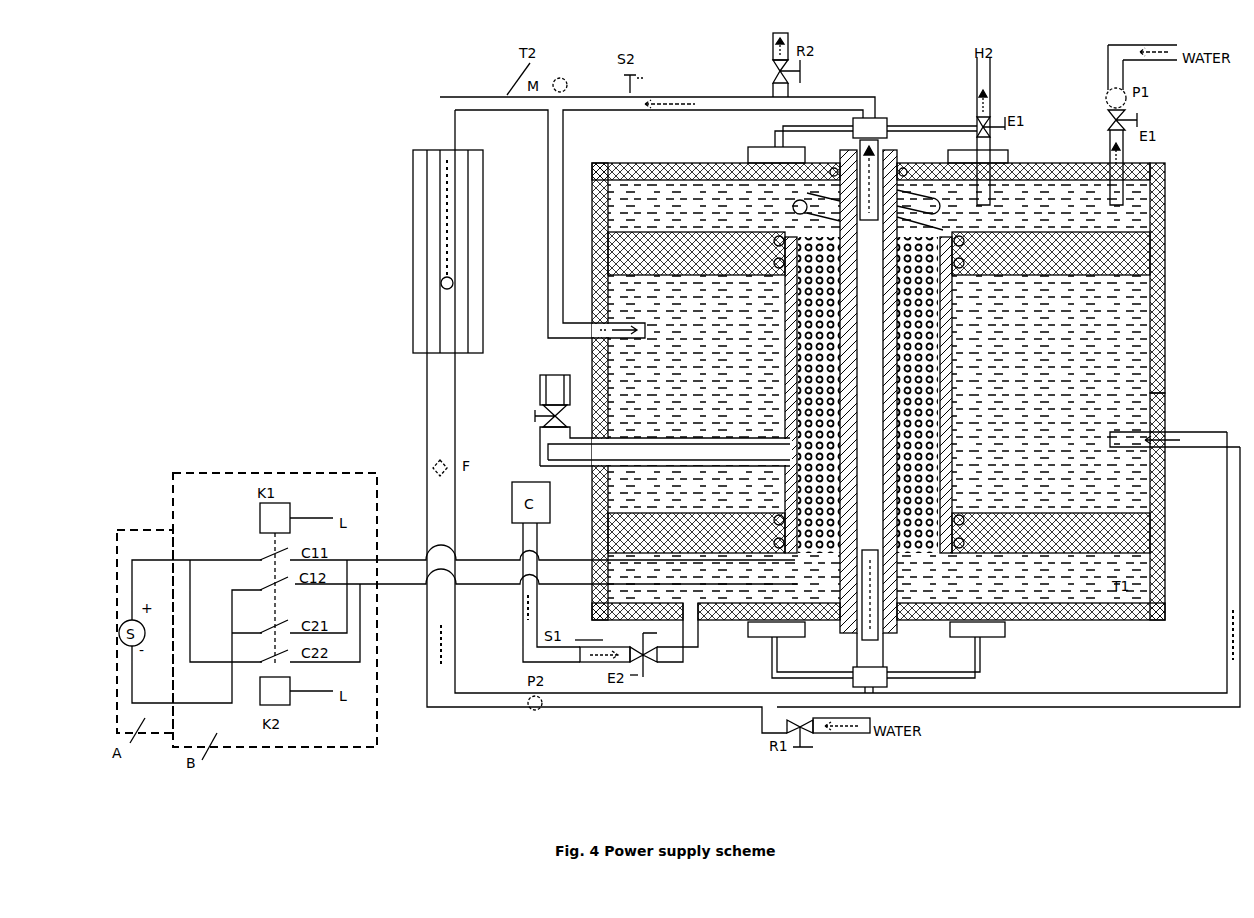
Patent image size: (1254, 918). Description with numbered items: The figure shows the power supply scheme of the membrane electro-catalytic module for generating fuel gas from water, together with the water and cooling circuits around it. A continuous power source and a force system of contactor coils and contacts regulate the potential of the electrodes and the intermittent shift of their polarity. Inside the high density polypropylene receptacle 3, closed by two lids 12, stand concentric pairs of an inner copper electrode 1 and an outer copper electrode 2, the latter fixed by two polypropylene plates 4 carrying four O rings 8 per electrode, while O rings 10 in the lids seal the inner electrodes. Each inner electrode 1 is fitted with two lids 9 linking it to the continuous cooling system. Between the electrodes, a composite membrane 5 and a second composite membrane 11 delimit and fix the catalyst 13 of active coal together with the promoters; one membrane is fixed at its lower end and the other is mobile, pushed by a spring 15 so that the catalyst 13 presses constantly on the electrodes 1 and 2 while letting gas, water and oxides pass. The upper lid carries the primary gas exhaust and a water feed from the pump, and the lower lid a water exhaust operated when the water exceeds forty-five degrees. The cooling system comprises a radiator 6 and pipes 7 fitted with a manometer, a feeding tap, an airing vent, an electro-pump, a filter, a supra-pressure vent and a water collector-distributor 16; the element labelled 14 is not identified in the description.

The copper electrode 1 is at (893, 168).
The copper electrode 2 is at (947, 247).
The high density polypropylene receptacle 3 is at (1163, 180).
The high density polypropylene plates 4 is at (1163, 217).
The composite membrane 5 is at (905, 263).
The radiator 6 is at (480, 230).
The pipes 7 is at (1100, 703).
The O rings 8 is at (960, 550).
The lids 9 is at (887, 616).
The O rings 10 is at (838, 613).
The composite membrane 11 is at (800, 560).
The lids 12 is at (778, 560).
The catalyst 13 is at (810, 500).
The feed pipe 14 is at (540, 443).
The spring 15 is at (800, 200).
The water collector-distributor 16 is at (860, 120).